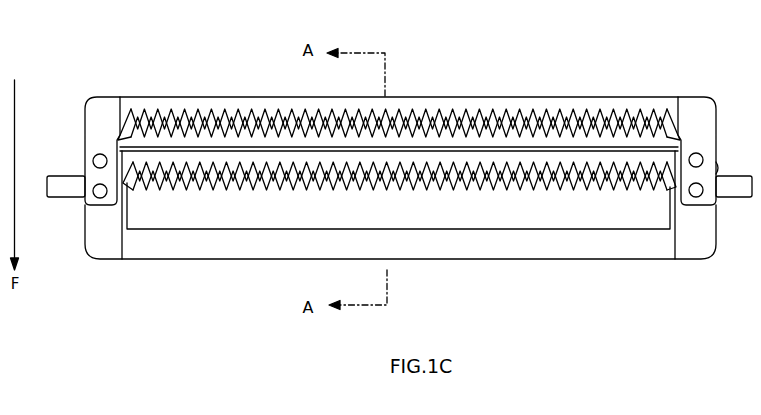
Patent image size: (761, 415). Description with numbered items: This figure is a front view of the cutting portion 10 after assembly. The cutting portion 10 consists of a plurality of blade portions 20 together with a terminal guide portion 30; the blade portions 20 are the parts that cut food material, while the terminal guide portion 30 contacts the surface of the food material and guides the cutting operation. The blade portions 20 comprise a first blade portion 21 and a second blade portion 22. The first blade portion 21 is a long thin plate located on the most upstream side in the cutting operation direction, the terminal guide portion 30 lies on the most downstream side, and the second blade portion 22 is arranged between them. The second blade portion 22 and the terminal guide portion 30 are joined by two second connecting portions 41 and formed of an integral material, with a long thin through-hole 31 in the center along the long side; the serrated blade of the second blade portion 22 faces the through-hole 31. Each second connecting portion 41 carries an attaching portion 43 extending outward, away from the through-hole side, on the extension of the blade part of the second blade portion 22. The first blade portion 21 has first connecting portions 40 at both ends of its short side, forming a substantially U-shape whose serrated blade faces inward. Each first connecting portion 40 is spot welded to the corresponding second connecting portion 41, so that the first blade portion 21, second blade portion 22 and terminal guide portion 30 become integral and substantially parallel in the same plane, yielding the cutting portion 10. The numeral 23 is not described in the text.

The cutting portion 10 is at (638, 297).
The blade portions 20 is at (272, 103).
The first blade portion 21 is at (530, 108).
The second blade portion 22 is at (445, 157).
The connector 23 is at (716, 168).
The terminal guide portion 30 is at (517, 250).
The through-hole 31 is at (160, 215).
The first connecting portion 40 is at (95, 112).
The second connecting portion 41 is at (102, 237).
The attaching portion 43 is at (57, 183).